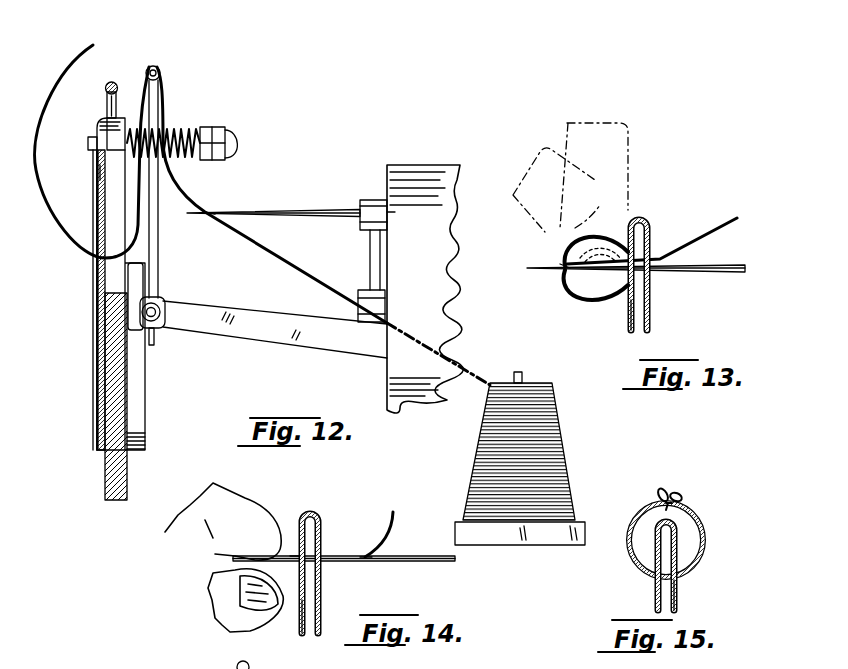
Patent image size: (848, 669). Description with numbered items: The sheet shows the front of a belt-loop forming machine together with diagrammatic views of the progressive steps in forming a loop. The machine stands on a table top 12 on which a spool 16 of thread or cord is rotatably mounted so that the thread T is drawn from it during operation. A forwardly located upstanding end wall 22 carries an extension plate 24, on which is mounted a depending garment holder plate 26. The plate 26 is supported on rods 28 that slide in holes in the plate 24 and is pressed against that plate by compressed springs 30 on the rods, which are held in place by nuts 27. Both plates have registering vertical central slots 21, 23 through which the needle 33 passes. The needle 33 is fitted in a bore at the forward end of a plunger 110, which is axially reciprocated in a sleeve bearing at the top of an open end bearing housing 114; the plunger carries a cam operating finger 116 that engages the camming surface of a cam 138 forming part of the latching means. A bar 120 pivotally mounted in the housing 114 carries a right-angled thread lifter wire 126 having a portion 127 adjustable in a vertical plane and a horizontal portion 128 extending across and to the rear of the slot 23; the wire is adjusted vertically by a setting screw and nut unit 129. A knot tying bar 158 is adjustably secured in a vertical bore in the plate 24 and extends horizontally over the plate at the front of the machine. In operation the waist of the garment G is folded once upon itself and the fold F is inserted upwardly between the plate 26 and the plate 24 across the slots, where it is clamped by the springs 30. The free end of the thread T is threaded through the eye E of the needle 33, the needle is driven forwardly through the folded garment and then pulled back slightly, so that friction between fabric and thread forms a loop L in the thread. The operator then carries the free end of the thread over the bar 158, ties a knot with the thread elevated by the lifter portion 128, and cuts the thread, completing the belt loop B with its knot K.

In FIG. 12, the table top 12 is at (495, 531).
In FIG. 12, the spool 16 is at (500, 441).
In FIG. 12, the vertical central slot 21 is at (117, 192).
In FIG. 12, the upstanding end wall 22 is at (140, 450).
In FIG. 12, the vertical central slot 23 is at (98, 236).
In FIG. 12, the extension plate 24 is at (105, 482).
In FIG. 12, the garment holder plate 26 is at (97, 310).
In FIG. 12, the nuts 27 is at (236, 134).
In FIG. 12, the rods 28 is at (195, 128).
In FIG. 12, the compressed springs 30 is at (210, 126).
In FIG. 12, the needle 33 is at (306, 212).
In FIG. 13, the needle 33 is at (727, 273).
In FIG. 14, the needle 33 is at (417, 562).
In FIG. 12, the plunger 110 is at (380, 200).
In FIG. 12, the bearing housing 114 is at (448, 166).
In FIG. 12, the cam operating finger 116 is at (372, 259).
In FIG. 12, the bar 120 is at (240, 333).
In FIG. 12, the thread lifter wire 126 is at (165, 272).
In FIG. 12, the adjustable portion 127 is at (160, 297).
In FIG. 12, the horizontal portion 128 is at (160, 70).
In FIG. 14, the horizontal portion 128 is at (238, 666).
In FIG. 12, the setting screw and nut unit 129 is at (160, 332).
In FIG. 12, the cam 138 is at (358, 318).
In FIG. 12, the knot tying bar 158 is at (115, 82).
In FIG. 15, the belt loop B is at (641, 563).
In FIG. 12, the eye E is at (210, 220).
In FIG. 13, the eye E is at (565, 262).
In FIG. 14, the eye E is at (362, 563).
In FIG. 12, the fold F is at (100, 172).
In FIG. 13, the fold F is at (651, 217).
In FIG. 14, the fold F is at (319, 513).
In FIG. 15, the fold F is at (680, 527).
In FIG. 12, the garment G is at (97, 430).
In FIG. 13, the garment G is at (628, 318).
In FIG. 14, the garment G is at (300, 620).
In FIG. 15, the garment G is at (677, 592).
In FIG. 15, the knot K is at (673, 489).
In FIG. 12, the loop L is at (64, 240).
In FIG. 13, the loop L is at (573, 298).
In FIG. 14, the loop L is at (291, 555).
In FIG. 12, the thread T is at (208, 198).
In FIG. 13, the thread T is at (718, 232).
In FIG. 14, the thread T is at (385, 531).